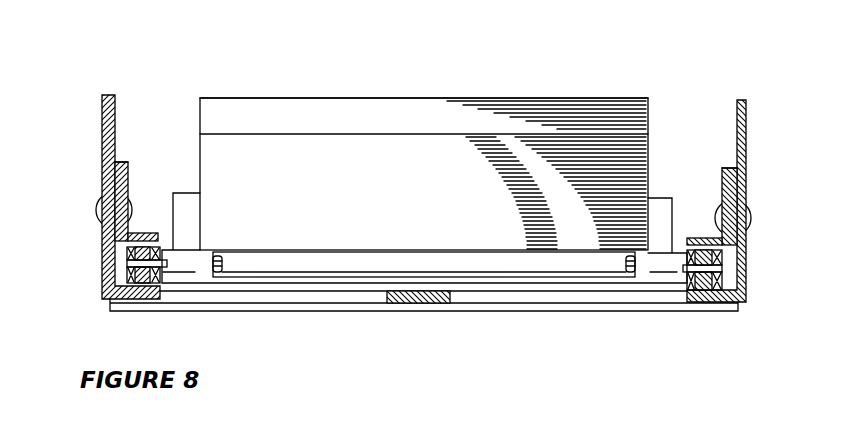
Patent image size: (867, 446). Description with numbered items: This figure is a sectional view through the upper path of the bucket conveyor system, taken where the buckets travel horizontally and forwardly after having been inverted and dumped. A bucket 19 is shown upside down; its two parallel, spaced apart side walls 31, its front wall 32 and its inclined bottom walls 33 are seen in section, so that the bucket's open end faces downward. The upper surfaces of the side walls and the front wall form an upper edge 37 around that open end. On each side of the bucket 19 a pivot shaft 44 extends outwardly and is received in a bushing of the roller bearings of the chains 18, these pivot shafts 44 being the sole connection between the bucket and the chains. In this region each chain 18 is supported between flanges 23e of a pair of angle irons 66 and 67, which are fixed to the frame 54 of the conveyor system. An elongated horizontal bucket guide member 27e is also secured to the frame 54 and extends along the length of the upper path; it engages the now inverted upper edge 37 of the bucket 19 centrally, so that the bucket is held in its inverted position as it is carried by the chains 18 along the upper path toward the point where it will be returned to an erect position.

The bucket 19 is at (549, 96).
The side wall 31 is at (208, 165).
The inclined bottom wall 33 is at (417, 126).
The front wall 32 is at (430, 192).
The flange 23e is at (148, 235).
The angle iron 66 is at (118, 162).
The angle iron 67 is at (126, 167).
The frame 54 is at (313, 300).
The chain 18 is at (135, 252).
The pivot shaft 44 is at (130, 265).
The upper edge 37 is at (370, 291).
The bucket guide member 27e is at (452, 296).